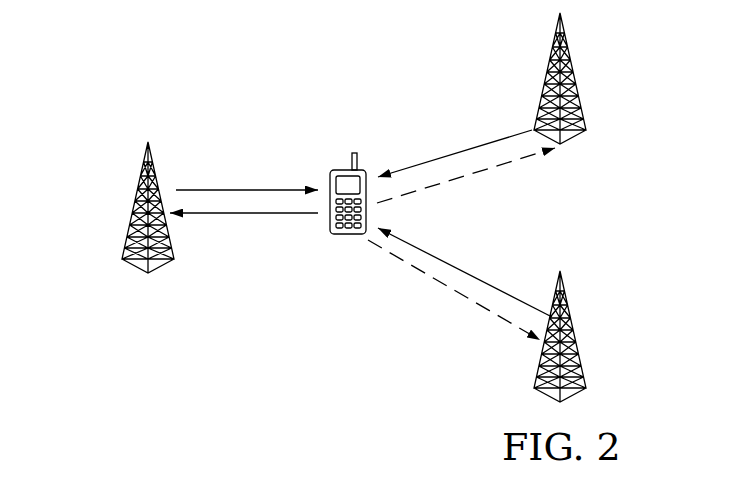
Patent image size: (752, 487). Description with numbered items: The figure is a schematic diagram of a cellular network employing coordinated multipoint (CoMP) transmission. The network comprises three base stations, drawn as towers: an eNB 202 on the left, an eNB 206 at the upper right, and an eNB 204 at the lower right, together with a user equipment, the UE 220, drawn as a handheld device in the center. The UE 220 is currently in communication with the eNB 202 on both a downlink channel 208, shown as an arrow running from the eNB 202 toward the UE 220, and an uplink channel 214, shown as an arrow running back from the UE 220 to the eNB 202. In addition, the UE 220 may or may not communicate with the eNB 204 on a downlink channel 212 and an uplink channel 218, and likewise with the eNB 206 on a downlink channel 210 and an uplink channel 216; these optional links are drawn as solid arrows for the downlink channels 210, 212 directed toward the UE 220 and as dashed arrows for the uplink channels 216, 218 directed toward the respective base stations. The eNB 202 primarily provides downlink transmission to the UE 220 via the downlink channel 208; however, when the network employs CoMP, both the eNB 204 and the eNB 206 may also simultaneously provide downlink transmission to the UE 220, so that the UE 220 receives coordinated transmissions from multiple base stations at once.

The eNB 202 is at (125, 240).
The eNB 204 is at (576, 337).
The eNB 206 is at (576, 78).
The downlink channel 208 is at (240, 189).
The downlink channel 210 is at (455, 155).
The downlink channel 212 is at (466, 272).
The uplink channel 214 is at (243, 214).
The uplink channel 216 is at (513, 161).
The uplink channel 218 is at (447, 289).
The UE 220 is at (342, 168).